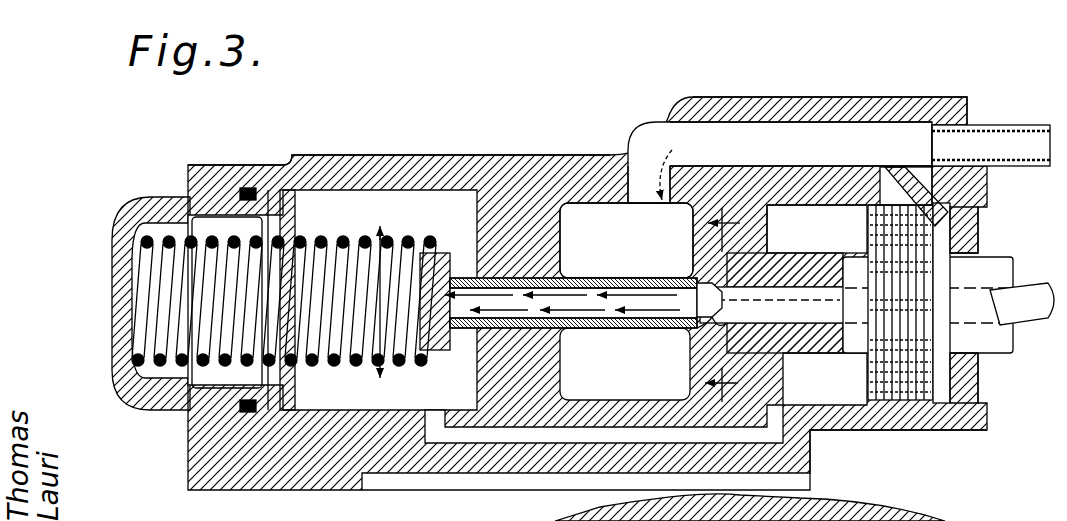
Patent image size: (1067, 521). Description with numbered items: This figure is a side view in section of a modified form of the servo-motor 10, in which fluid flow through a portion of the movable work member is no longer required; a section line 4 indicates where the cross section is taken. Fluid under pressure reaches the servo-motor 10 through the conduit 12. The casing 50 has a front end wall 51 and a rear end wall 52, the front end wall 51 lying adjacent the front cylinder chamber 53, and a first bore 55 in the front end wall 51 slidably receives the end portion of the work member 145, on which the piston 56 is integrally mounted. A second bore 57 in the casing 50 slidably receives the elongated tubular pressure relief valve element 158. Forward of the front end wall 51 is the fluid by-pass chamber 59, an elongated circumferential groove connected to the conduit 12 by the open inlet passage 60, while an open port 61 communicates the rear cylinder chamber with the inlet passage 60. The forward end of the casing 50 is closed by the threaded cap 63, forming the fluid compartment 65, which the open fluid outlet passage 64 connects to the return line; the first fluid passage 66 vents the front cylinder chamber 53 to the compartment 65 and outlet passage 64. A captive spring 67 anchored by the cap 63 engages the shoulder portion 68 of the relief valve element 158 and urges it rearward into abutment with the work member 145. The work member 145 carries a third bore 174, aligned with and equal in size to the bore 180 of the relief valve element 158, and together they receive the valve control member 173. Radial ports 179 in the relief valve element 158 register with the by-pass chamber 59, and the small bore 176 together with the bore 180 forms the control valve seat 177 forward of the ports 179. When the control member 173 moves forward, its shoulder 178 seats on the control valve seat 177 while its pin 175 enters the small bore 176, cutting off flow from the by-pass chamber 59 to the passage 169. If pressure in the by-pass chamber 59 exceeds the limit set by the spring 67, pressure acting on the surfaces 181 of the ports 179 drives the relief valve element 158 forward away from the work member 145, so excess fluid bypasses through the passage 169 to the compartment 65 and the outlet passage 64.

The servo-motor 10 is at (834, 87).
The conduit 12 is at (1012, 145).
The casing 50 is at (423, 163).
The front end wall 51 is at (743, 177).
The rear end wall 52 is at (977, 217).
The front cylinder chamber 53 is at (800, 207).
The first bore 55 is at (767, 240).
The piston 56 is at (930, 183).
The second bore 57 is at (560, 240).
The fluid by-pass chamber 59 is at (610, 223).
The open inlet passage 60 is at (735, 130).
The open port 61 is at (952, 148).
The cap 63 is at (113, 317).
The open fluid outlet passage 64 is at (350, 195).
The fluid compartment 65 is at (313, 380).
The first fluid passage 66 is at (570, 437).
The captive spring 67 is at (223, 365).
The shoulder portion 68 is at (460, 250).
The work member 145 is at (840, 196).
The pressure relief valve element 158 is at (507, 277).
The passage 169 is at (487, 295).
The valve control member 173 is at (823, 313).
The third bore 174 is at (812, 262).
The pin 175 is at (780, 247).
The small bore 176 is at (683, 310).
The control valve seat 177 is at (697, 285).
The shoulder 178 is at (770, 352).
The ports 179 is at (717, 253).
The bore 180 is at (717, 347).
The surfaces 181 is at (713, 337).
The section line 4- 4 is at (729, 305).